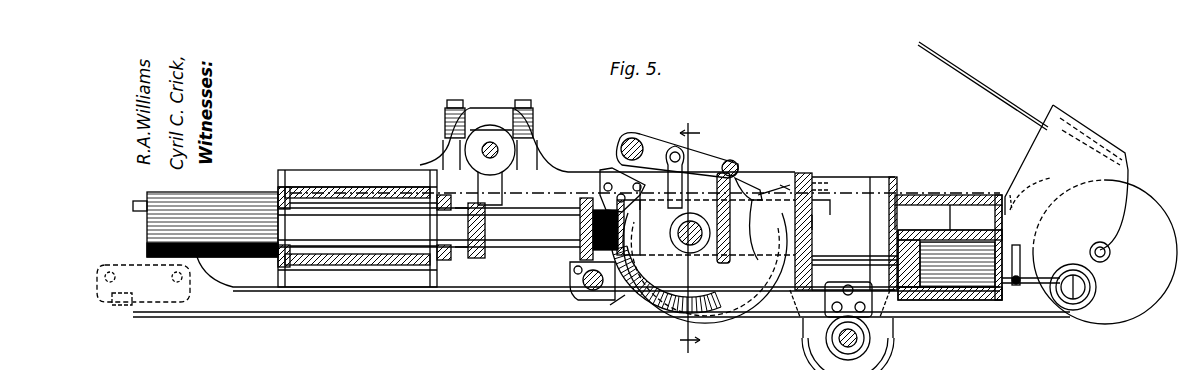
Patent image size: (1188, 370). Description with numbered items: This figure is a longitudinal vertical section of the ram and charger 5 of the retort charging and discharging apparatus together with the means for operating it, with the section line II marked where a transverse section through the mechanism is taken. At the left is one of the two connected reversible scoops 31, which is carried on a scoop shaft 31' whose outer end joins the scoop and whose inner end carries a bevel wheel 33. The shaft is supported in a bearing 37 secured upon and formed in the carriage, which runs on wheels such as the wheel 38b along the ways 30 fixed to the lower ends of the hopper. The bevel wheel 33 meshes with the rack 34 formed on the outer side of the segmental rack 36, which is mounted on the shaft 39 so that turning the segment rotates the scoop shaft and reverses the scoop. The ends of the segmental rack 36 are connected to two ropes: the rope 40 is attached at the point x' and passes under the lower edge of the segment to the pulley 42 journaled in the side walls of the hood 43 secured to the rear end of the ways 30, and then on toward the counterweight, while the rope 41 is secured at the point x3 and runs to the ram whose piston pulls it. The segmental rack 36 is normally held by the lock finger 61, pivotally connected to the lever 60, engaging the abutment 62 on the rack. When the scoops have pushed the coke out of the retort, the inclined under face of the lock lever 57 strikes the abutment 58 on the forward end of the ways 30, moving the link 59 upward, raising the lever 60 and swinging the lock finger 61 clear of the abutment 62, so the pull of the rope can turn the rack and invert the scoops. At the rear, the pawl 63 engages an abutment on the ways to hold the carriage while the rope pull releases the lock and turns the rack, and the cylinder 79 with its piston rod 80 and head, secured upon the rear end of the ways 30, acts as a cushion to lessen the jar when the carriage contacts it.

The switch box 5 is at (170, 278).
The ways 30 is at (405, 289).
The reversible scoop 31 is at (336, 224).
The scoop shaft 31' is at (488, 242).
The bevel wheel 33 is at (605, 180).
The rack 34 is at (668, 318).
The segmental rack 36 is at (709, 261).
The bearing 37 is at (355, 187).
The carriage wheel 38b is at (888, 355).
The shaft 39 is at (692, 218).
The rope 40 is at (1065, 312).
The rope 41 is at (332, 318).
The pulley 42 is at (1130, 280).
The hood 43 is at (1118, 176).
The lock lever 57 is at (600, 300).
The abutment 58 is at (120, 307).
The link 59 is at (682, 160).
The lever 60 is at (655, 148).
The lock finger 61 is at (629, 191).
The abutment 62 is at (660, 272).
The pawl 63 is at (758, 185).
The cylinder 79 is at (940, 230).
The piston rod 80 is at (850, 258).
The section line II is at (687, 240).
The rope attachment point x3 is at (768, 182).
The rope attachment point x' is at (617, 322).